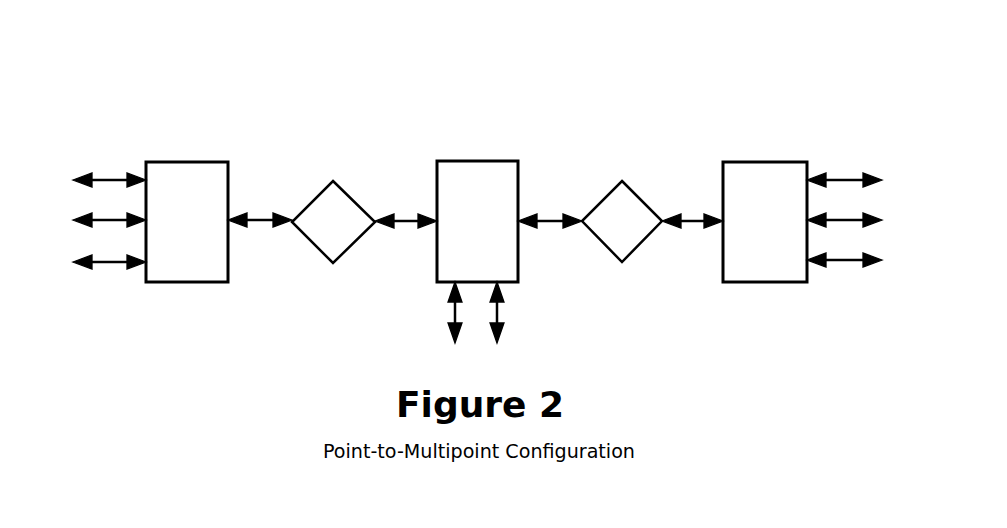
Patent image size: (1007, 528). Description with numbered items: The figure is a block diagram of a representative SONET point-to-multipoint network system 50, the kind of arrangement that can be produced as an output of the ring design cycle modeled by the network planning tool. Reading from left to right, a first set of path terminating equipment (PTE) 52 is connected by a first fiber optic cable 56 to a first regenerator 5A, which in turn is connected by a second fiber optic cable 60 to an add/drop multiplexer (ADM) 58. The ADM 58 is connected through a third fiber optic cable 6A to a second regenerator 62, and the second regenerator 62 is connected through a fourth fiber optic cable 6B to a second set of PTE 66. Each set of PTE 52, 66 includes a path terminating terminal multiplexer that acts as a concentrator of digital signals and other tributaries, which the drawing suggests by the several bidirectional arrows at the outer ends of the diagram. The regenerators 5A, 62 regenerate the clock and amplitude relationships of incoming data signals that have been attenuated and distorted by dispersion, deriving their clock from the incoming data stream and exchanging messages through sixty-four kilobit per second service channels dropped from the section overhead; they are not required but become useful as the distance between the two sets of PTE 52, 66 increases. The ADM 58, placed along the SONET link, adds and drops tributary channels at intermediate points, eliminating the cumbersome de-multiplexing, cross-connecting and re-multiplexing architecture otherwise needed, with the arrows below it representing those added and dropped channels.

The point-to-multipoint network system 50 is at (588, 93).
The first set of path terminating equipment (PTE) 52 is at (208, 282).
The first fiber optic cable 56 is at (262, 218).
The regenerator (REG) 5A is at (341, 245).
The second fiber optic cable 60 is at (409, 222).
The add/drop multiplexer (ADM) 58 is at (463, 168).
The link between ADM and regenerator 6A is at (549, 218).
The second regenerator 62 is at (635, 240).
The link between regenerator and PTE 6B is at (693, 220).
The second set of path terminating equipment (PTE) 66 is at (765, 172).